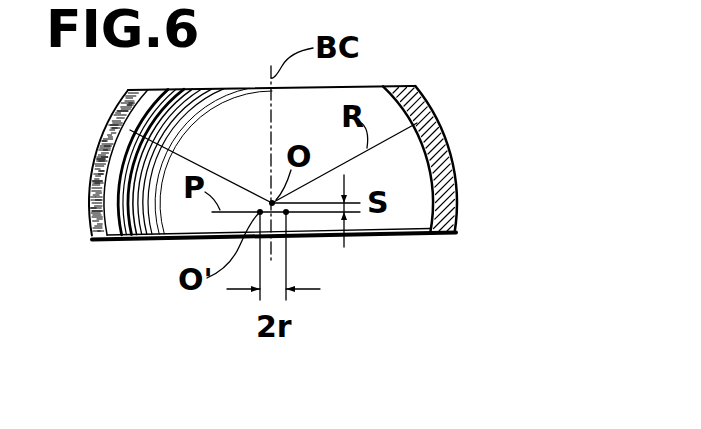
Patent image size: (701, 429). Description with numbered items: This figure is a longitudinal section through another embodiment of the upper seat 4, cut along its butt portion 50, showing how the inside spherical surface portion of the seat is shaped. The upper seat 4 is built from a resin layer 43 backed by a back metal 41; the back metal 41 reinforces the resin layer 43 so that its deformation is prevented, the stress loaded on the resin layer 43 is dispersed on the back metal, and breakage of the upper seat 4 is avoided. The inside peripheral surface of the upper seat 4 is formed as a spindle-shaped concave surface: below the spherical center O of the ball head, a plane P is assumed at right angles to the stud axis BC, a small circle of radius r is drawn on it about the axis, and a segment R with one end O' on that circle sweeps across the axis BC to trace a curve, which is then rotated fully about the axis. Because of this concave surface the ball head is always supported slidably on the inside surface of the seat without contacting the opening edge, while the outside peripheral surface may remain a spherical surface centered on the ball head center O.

The upper seat 4 is at (483, 141).
The back metal 41 is at (420, 103).
The resin layer 43 is at (428, 216).
The butt portion 50 is at (100, 218).